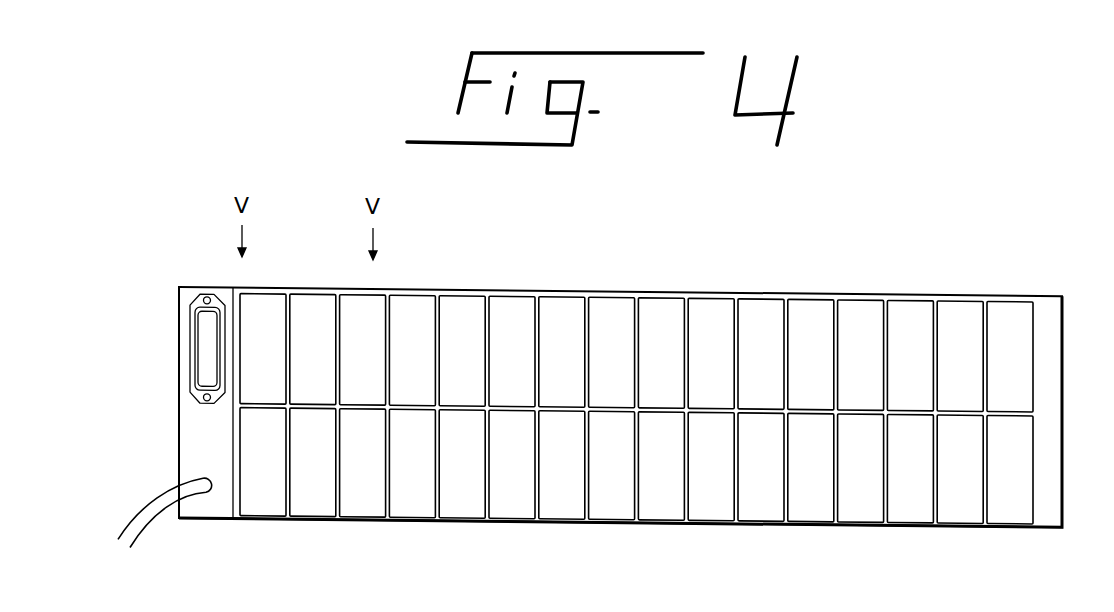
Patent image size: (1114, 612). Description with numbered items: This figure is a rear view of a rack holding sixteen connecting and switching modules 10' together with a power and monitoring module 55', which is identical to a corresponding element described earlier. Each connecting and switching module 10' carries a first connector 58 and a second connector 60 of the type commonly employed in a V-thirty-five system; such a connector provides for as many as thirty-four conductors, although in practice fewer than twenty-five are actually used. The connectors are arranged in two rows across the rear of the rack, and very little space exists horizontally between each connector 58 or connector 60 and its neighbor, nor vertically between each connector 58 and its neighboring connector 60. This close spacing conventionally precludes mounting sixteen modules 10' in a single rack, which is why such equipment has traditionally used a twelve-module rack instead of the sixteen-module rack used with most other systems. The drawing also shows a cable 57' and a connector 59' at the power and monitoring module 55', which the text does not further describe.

The connecting and switching module 10' is at (540, 406).
The power and monitoring module 55' is at (563, 406).
The cable 57' is at (134, 513).
The first connector 58 is at (262, 313).
The connector 59' is at (145, 348).
The second connector 60 is at (260, 498).